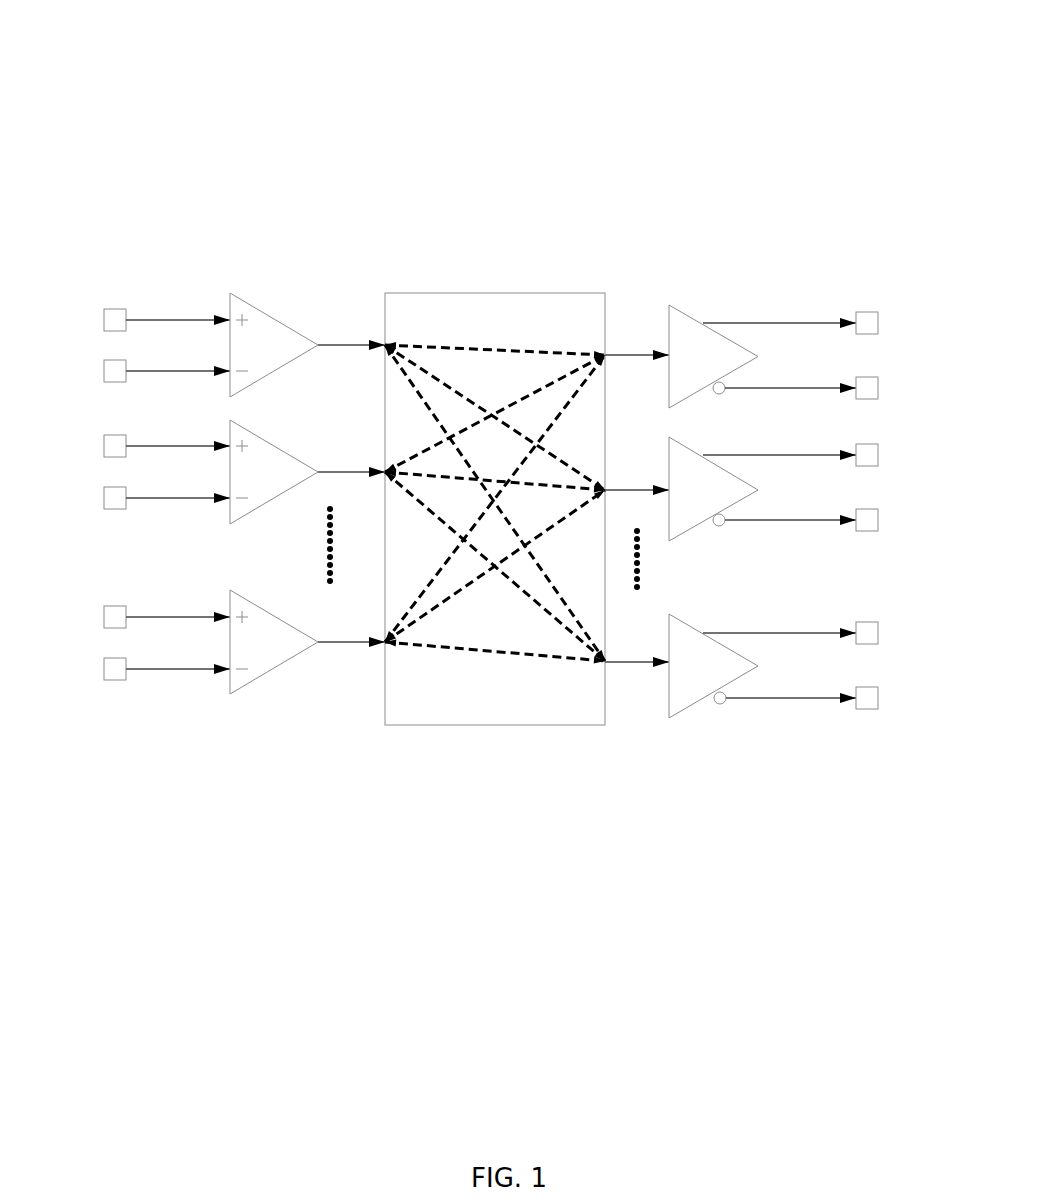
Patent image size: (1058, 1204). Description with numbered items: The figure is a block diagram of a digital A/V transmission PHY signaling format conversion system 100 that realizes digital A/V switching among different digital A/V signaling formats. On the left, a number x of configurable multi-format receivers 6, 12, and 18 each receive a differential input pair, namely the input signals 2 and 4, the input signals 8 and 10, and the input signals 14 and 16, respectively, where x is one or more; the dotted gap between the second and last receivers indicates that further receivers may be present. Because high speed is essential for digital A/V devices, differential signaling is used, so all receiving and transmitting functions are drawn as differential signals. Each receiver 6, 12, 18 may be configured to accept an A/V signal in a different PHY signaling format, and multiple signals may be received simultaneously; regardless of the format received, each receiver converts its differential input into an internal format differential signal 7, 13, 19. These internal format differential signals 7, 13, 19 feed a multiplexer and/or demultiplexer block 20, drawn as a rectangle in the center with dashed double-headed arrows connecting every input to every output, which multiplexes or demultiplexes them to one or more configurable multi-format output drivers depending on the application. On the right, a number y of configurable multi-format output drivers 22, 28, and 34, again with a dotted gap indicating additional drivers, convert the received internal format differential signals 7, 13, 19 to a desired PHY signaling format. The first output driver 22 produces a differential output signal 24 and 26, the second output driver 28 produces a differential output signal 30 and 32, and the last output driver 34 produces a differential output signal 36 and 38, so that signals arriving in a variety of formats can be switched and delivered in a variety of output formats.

The digital A/V transmission PHY signaling format conversion system 100 is at (457, 96).
The differential input signal IN1+ 2 is at (146, 333).
The differential input signal IN1− 4 is at (148, 386).
The configurable multi-format receiver RCV 1 6 is at (274, 345).
The internal format differential signal 7 is at (351, 324).
The differential input signal IN2+ 8 is at (146, 457).
The differential input signal IN2− 10 is at (145, 510).
The configurable multi-format receiver RCV 2 12 is at (274, 472).
The internal format differential signal 13 is at (351, 454).
The differential input signal Inx+ 14 is at (145, 630).
The differential input signal Inx− 16 is at (145, 682).
The configurable multi-format receiver RCV x 18 is at (274, 642).
The internal format differential signal 19 is at (351, 622).
The multiplexer and/or demultiplexer block 20 is at (460, 293).
The configurable multi-format output driver DRV1 22 is at (681, 356).
The differential output signal OUT1+ 24 is at (823, 339).
The differential output signal OUT1− 26 is at (831, 404).
The configurable multi-format output driver DRV2 28 is at (681, 489).
The differential output signal OUT1+ 30 is at (823, 473).
The differential output signal OUT1− 32 is at (832, 536).
The configurable multi-format output driver DRVy 34 is at (681, 666).
The differential output signal OUT1+ 36 is at (824, 649).
The differential output signal OUT1− 38 is at (834, 713).